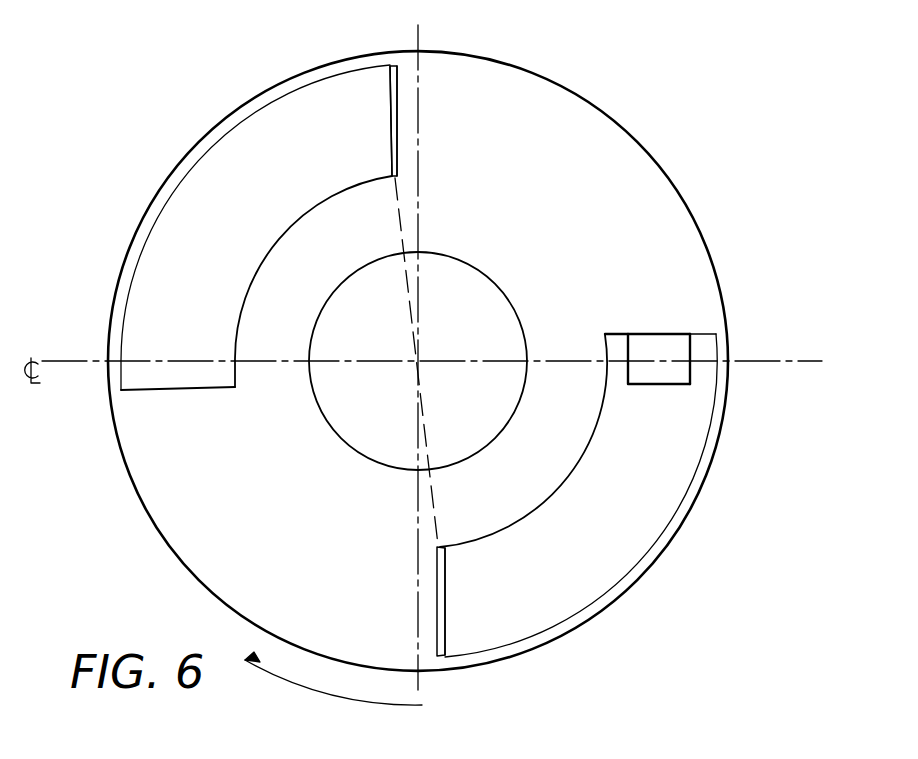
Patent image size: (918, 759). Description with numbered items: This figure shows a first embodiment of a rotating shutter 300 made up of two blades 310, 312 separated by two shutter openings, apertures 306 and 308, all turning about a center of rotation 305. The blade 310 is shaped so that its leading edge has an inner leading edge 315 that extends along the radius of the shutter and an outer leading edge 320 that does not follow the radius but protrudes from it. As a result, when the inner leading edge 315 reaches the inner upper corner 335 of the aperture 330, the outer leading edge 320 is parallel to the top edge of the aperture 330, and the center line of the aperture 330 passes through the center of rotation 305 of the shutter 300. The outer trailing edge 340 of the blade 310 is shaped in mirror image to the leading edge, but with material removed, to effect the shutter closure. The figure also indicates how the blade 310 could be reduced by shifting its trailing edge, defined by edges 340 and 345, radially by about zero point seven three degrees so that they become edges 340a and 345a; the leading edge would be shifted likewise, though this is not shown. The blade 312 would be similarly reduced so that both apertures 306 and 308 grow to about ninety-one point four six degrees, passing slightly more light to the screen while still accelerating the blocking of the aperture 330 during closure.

The shutter 300 is at (765, 168).
The center of rotation 305 is at (418, 362).
The aperture 306 is at (177, 230).
The aperture 308 is at (660, 510).
The blade 310 is at (667, 210).
The blade 312 is at (192, 542).
The inner leading edge 315 is at (218, 388).
The outer leading edge 320 is at (152, 390).
The aperture 330 is at (683, 345).
The inner upper corner 335 is at (631, 336).
The outer trailing edge 340 is at (393, 92).
The shifted trailing edge 340a is at (398, 100).
The trailing edge 345 is at (392, 158).
The shifted trailing edge 345a is at (400, 160).